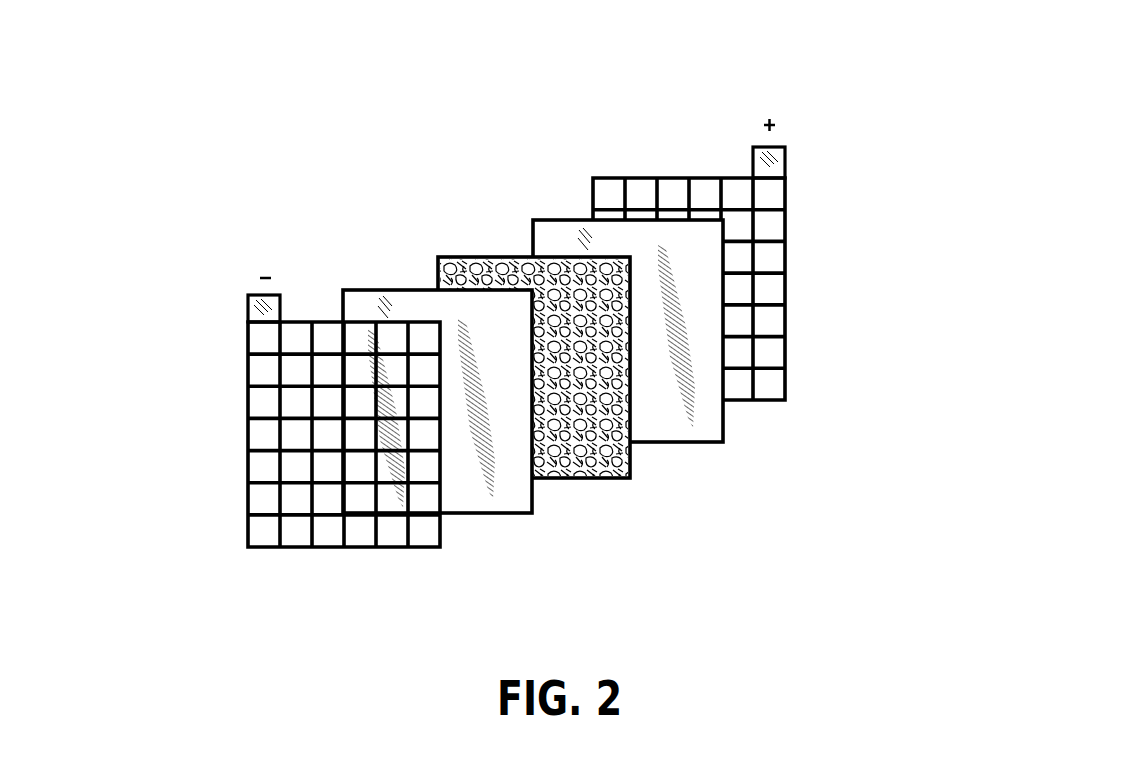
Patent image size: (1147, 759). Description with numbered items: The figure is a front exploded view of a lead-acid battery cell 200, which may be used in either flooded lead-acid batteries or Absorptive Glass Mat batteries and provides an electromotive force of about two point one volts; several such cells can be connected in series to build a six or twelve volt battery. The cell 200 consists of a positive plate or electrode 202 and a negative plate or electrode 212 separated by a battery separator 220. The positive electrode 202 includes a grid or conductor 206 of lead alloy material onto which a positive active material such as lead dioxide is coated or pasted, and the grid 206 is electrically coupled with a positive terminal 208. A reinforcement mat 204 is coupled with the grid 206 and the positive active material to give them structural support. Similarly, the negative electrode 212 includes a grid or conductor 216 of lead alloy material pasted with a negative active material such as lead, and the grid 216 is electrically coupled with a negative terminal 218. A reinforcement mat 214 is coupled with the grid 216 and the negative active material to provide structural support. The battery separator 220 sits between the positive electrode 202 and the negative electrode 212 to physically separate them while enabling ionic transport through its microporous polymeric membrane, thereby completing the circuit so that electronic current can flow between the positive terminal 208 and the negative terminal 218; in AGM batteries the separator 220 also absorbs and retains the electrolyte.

The lead-acid battery cell 200 is at (527, 365).
The positive plate or electrode 202 is at (759, 301).
The reinforcement mat 204 is at (723, 428).
The grid or conductor 206 is at (787, 350).
The positive terminal 208 is at (748, 160).
The negative plate or electrode 212 is at (300, 451).
The reinforcement mat 214 is at (485, 513).
The grid or conductor 216 is at (317, 547).
The negative terminal 218 is at (247, 312).
The battery separator 220 is at (580, 480).